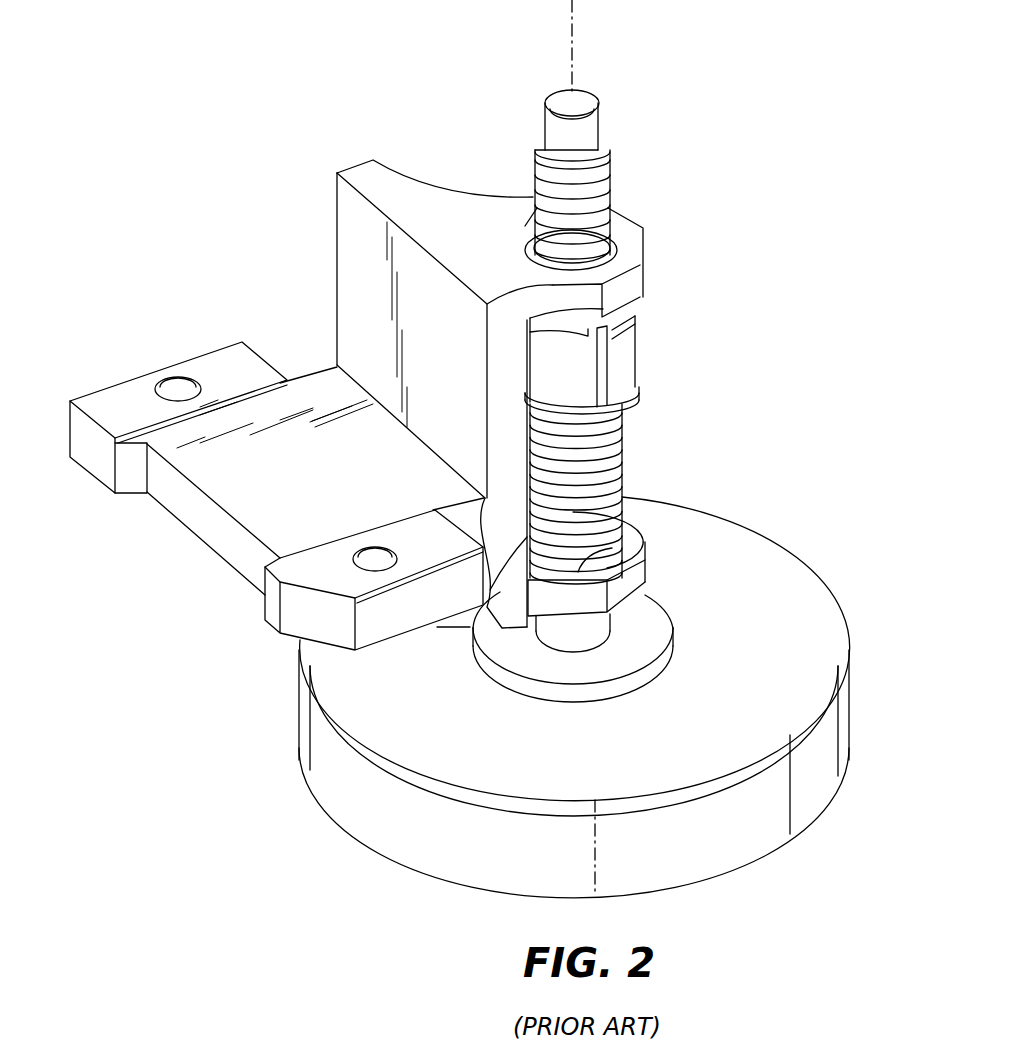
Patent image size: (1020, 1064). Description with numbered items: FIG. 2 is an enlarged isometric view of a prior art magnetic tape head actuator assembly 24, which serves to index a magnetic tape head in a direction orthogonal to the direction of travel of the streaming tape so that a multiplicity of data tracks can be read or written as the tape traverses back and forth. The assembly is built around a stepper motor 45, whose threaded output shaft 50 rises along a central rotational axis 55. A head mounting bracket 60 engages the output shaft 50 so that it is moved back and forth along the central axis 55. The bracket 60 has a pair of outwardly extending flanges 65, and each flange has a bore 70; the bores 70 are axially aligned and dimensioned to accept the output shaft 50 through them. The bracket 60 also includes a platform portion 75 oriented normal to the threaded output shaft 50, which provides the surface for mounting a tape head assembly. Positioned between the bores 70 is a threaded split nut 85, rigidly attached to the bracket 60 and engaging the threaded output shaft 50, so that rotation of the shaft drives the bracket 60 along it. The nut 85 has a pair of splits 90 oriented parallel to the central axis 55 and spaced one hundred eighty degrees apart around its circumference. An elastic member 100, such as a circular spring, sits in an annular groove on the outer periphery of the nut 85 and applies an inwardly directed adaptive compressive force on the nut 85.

The prior art leveling foot assembly 24 is at (246, 895).
The stepper motor 45 is at (808, 626).
The threaded output shaft 50 is at (622, 463).
The central rotational axis 55 is at (574, 38).
The head mounting bracket 60 is at (355, 286).
The outwardly extending flanges 65 is at (632, 228).
The bore 70 is at (533, 247).
The platform portion 75 is at (120, 395).
The threaded split nut 85 is at (637, 330).
The splits 90 is at (620, 358).
The elastic member 100 is at (638, 388).